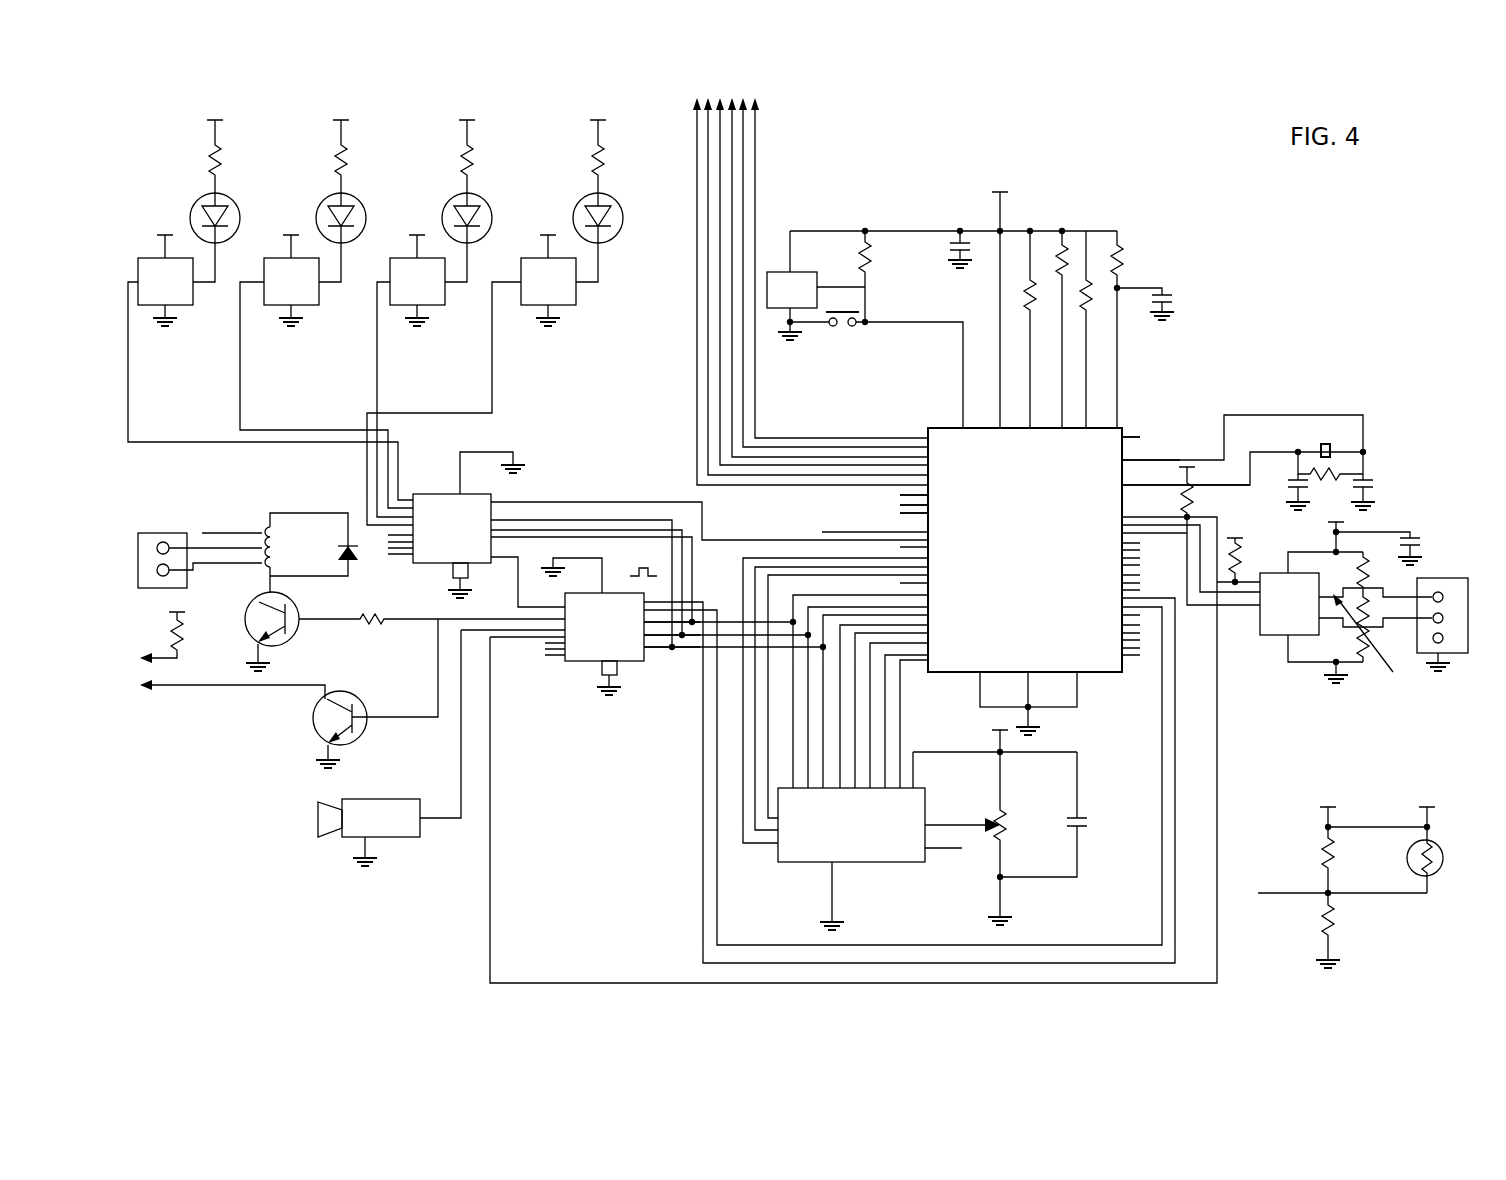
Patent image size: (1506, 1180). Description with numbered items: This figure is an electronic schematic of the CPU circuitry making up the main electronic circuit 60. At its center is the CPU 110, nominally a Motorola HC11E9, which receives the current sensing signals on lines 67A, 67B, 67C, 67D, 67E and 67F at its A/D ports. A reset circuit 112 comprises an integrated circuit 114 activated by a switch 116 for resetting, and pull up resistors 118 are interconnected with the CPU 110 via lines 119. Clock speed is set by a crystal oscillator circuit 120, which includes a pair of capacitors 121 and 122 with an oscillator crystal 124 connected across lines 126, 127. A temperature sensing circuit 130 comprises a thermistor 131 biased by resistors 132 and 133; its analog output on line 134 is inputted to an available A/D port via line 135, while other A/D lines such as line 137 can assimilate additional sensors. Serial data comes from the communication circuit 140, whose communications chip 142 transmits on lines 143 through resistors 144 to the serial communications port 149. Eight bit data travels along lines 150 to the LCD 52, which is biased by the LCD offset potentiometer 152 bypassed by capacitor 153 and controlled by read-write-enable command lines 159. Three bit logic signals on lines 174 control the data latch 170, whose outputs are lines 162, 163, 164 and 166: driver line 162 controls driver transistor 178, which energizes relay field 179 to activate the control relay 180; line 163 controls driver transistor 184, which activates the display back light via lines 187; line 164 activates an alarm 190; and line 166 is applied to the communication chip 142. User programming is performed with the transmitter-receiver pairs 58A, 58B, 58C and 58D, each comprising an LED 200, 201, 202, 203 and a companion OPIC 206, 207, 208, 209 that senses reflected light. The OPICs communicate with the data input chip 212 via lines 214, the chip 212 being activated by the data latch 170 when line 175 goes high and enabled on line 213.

The transmitter-receiver pair switch 58A is at (176, 190).
The transmitter-receiver pair switch 58B is at (302, 190).
The transmitter-receiver pair switch 58C is at (428, 190).
The transmitter-receiver pair switch 58D is at (559, 190).
The LED 200 is at (230, 200).
The LED 201 is at (356, 200).
The LED 202 is at (482, 200).
The LED 203 is at (613, 200).
The OPIC 206 is at (195, 292).
The OPIC 207 is at (321, 292).
The OPIC 208 is at (447, 292).
The OPIC 209 is at (578, 292).
The lines 214 is at (388, 480).
The line 213 is at (578, 500).
The data input chip 212 is at (496, 496).
The line 175 is at (517, 570).
The data latch 170 is at (584, 668).
The control relay 180 is at (161, 528).
The relay field 179 is at (268, 525).
The driver transistor 178 is at (299, 613).
The lines 187 is at (180, 687).
The driver transistor 184 is at (343, 689).
The driver line 162 is at (403, 622).
The line 163 is at (415, 719).
The alarm 190 is at (360, 797).
The line 164 is at (447, 820).
The line 166 is at (492, 806).
The line 67A is at (697, 278).
The line 67B is at (708, 298).
The line 67C is at (718, 347).
The line 67D is at (732, 200).
The line 67E is at (743, 222).
The line 67F is at (753, 242).
The integrated circuit 114 is at (792, 273).
The switch 116 is at (853, 330).
The reset circuit 112 is at (930, 228).
The pull up resistors 118 is at (1087, 285).
The lines 119 is at (1058, 395).
The CPU 110 is at (1076, 573).
The line 137 is at (922, 518).
The line 135 is at (843, 530).
The lines 174 is at (703, 656).
The read-write-enable command lines 159 is at (768, 775).
The lines 150 is at (920, 680).
The LCD 52 is at (896, 854).
The LCD offset potentiometer 152 is at (1004, 810).
The capacitor 153 is at (1082, 810).
The crystal oscillator circuit 120 is at (1334, 428).
The oscillator crystal 124 is at (1324, 444).
The capacitor 122 is at (1293, 489).
The capacitor 121 is at (1370, 482).
The line 126 is at (1142, 452).
The line 127 is at (1152, 483).
The communications chip 142 is at (1283, 618).
The resistors 144 is at (1368, 562).
The lines 143 is at (1376, 649).
The communication circuit 140 is at (1443, 560).
The RS-232 communications port 149 is at (1467, 597).
The main electronic circuit 60 is at (1263, 372).
The temperature sensing circuit 130 is at (1401, 800).
The resistor 132 is at (1326, 852).
The thermistor 131 is at (1441, 868).
The line 134 is at (1288, 896).
The resistor 133 is at (1333, 925).